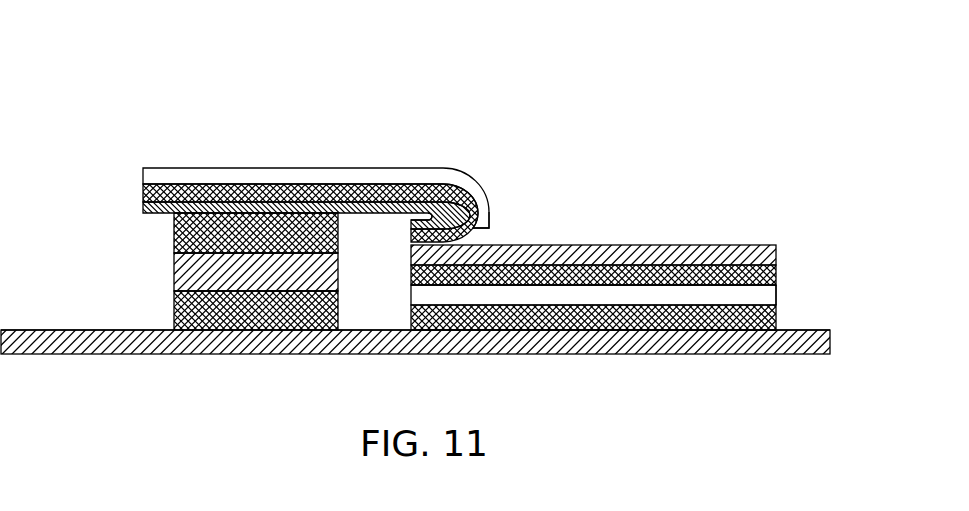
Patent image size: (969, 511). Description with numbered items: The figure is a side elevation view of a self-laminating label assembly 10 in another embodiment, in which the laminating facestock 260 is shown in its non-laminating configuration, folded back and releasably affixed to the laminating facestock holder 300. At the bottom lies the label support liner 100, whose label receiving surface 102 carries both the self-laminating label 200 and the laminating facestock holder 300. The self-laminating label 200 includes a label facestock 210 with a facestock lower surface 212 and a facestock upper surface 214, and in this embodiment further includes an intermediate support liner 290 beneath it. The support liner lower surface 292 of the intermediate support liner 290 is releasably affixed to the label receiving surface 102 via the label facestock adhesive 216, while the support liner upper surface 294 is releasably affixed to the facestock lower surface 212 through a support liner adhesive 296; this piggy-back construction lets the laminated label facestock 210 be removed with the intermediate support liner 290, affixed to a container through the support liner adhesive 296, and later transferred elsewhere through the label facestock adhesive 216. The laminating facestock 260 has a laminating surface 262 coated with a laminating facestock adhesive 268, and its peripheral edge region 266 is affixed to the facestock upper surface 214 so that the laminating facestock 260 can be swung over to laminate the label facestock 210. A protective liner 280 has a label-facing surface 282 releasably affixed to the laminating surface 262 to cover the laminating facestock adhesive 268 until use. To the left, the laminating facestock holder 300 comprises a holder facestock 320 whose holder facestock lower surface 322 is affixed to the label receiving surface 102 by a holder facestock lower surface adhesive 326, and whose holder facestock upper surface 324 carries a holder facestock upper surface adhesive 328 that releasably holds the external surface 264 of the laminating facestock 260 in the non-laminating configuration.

The self-laminating label assembly 10 is at (499, 122).
The label support liner 100 is at (730, 355).
The label receiving surface 102 is at (587, 331).
The self-laminating label 200 is at (515, 190).
The label facestock 210 is at (760, 255).
The facestock lower surface 212 is at (757, 272).
The facestock upper surface 214 is at (705, 244).
The label facestock adhesive 216 is at (507, 317).
The laminating facestock 260 is at (206, 200).
The laminating surface 262 is at (297, 192).
The external surface 264 is at (202, 217).
The peripheral edge region 266 is at (417, 222).
The laminating facestock adhesive 268 is at (372, 203).
The protective liner 280 is at (478, 213).
The label-facing surface 282 is at (160, 182).
The intermediate support liner 290 is at (730, 295).
The support liner lower surface 292 is at (690, 305).
The support liner upper surface 294 is at (643, 285).
The support liner adhesive 296 is at (740, 277).
The laminating facestock holder 300 is at (116, 277).
The holder facestock 320 is at (208, 273).
The holder facestock lower surface 322 is at (270, 293).
The holder facestock upper surface 324 is at (265, 252).
The holder facestock lower surface adhesive 326 is at (320, 310).
The holder facestock upper surface adhesive 328 is at (185, 232).